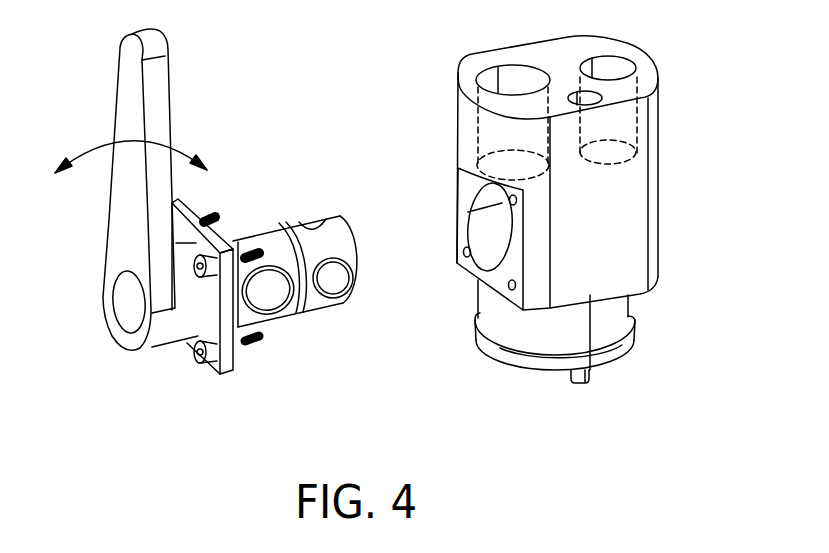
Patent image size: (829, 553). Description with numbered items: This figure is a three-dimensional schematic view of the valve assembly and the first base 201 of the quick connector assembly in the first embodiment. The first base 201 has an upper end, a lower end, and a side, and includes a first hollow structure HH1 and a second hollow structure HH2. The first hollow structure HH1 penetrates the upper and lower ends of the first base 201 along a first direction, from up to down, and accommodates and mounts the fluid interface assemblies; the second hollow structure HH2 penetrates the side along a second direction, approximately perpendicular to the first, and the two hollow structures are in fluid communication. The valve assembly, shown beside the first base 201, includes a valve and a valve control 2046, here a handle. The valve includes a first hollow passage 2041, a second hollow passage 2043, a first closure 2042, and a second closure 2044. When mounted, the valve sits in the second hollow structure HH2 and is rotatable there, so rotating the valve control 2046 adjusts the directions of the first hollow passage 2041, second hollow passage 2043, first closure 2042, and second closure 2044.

The first base 201 is at (612, 209).
The first hollow structure HH1 is at (637, 143).
The second hollow structure HH2 is at (600, 218).
The first hollow passage 2041 is at (250, 241).
The first closure 2042 is at (275, 292).
The second hollow passage 2043 is at (316, 223).
The second closure 2044 is at (330, 280).
The valve control 2046 is at (152, 100).